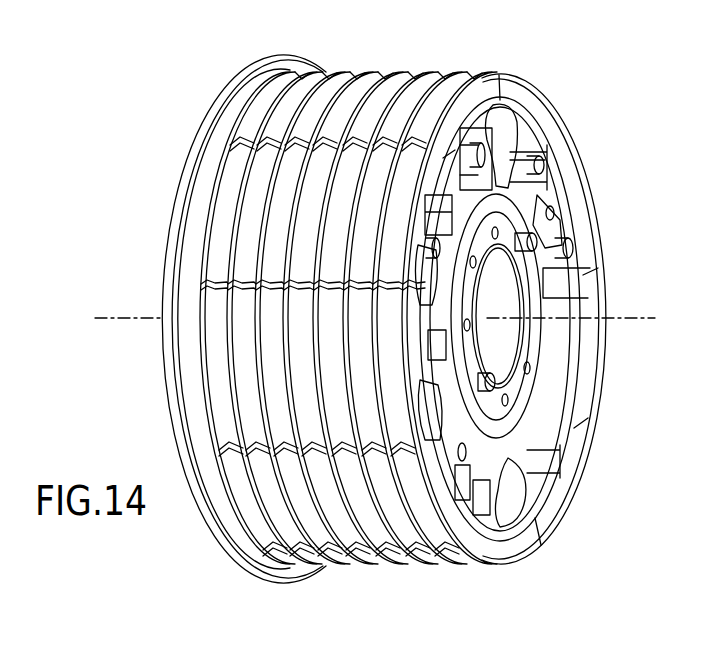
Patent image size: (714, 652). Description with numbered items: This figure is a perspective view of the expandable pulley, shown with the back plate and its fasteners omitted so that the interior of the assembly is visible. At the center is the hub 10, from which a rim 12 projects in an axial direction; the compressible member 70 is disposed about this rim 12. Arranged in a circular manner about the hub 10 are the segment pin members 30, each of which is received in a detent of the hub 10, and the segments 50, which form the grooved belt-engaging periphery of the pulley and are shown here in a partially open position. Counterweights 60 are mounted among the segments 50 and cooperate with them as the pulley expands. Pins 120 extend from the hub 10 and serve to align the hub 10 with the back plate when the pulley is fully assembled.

The hub 10 is at (282, 55).
The segments 50 is at (348, 72).
The counterweights 60 is at (503, 132).
The segment pin members 30 is at (543, 166).
The pins 120 is at (534, 243).
The compressible member 70 is at (545, 290).
The rim 12 is at (518, 383).